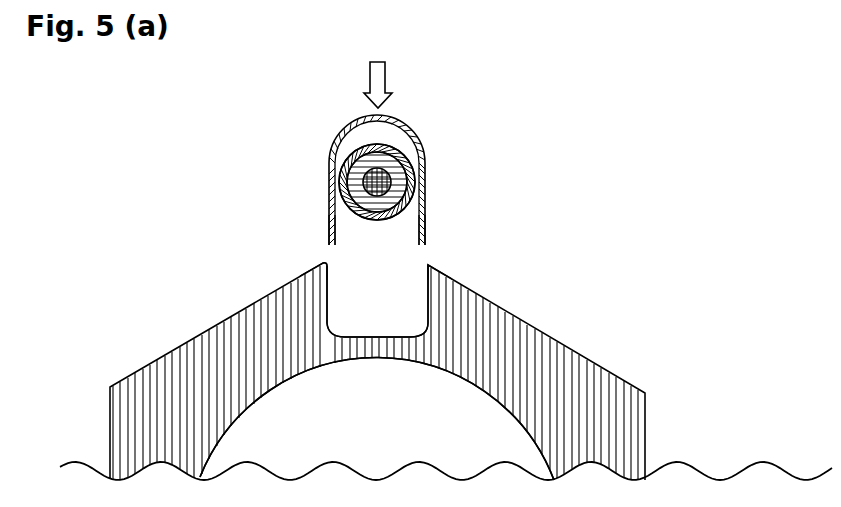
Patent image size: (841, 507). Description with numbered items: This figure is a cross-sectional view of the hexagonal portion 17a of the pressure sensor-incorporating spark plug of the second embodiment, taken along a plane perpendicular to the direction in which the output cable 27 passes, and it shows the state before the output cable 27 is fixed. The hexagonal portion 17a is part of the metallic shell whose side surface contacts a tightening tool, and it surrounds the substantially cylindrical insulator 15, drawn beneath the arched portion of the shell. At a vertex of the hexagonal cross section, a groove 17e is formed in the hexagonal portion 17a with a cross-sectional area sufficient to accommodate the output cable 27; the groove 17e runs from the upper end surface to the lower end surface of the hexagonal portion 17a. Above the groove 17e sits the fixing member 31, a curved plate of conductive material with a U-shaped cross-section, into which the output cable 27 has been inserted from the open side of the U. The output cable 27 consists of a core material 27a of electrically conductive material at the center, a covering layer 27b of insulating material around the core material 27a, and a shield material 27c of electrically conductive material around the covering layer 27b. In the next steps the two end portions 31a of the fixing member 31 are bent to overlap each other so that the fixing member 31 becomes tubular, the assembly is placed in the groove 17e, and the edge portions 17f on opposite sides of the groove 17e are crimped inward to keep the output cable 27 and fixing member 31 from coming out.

The insulator 15 is at (477, 460).
The hexagonal portion 17a is at (545, 368).
The groove 17e is at (400, 303).
The edge portions 17f is at (323, 262).
The output cable 27 is at (180, 117).
The core material 27a is at (366, 167).
The covering layer 27b is at (351, 186).
The shield material 27c is at (332, 216).
The fixing member 31 is at (420, 140).
The end portions 31a is at (330, 243).